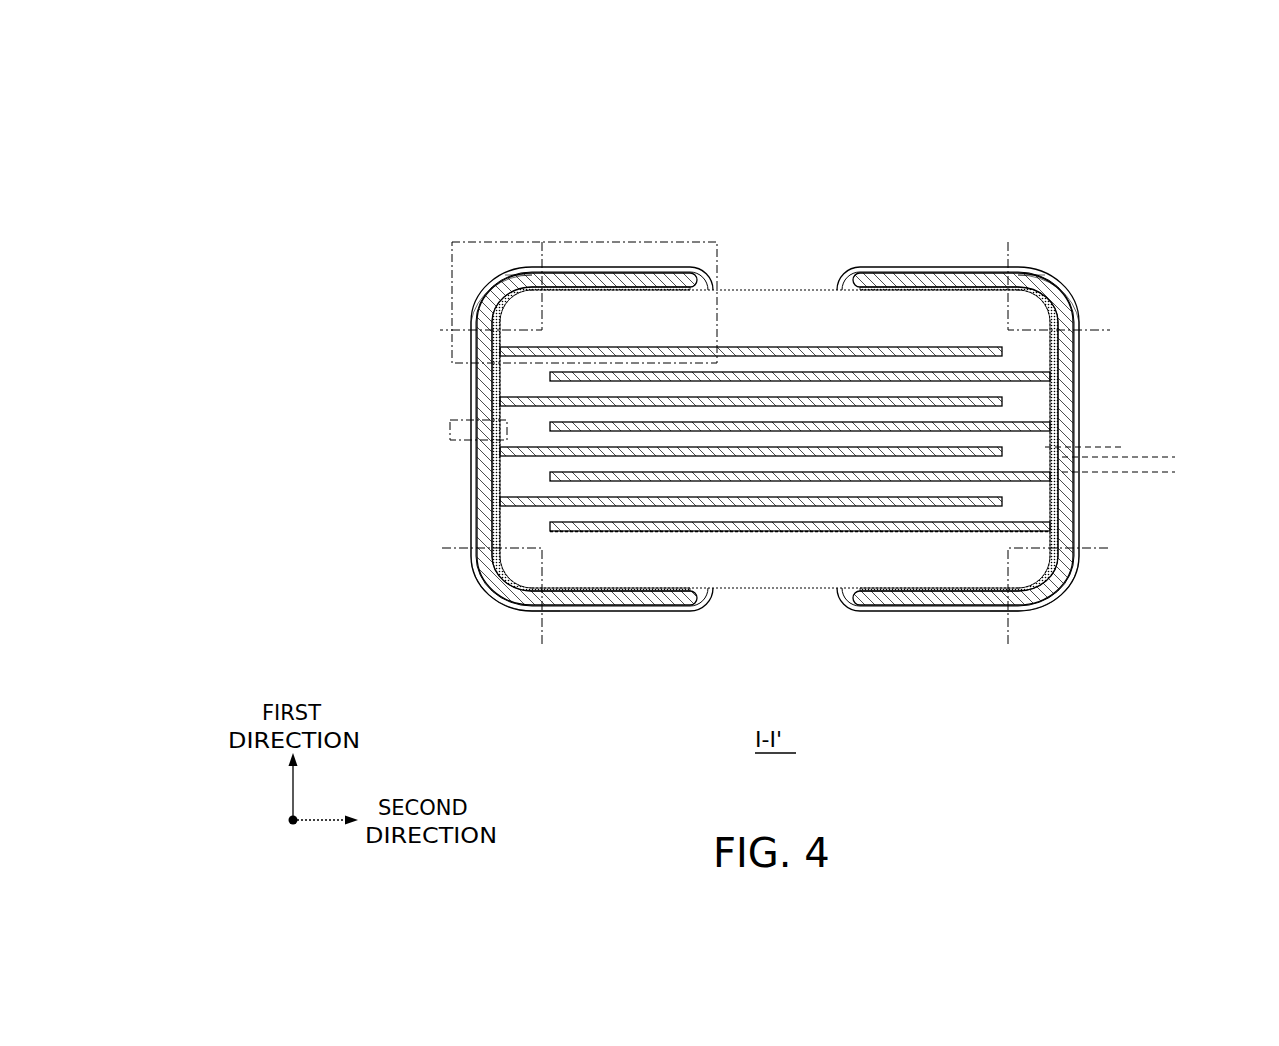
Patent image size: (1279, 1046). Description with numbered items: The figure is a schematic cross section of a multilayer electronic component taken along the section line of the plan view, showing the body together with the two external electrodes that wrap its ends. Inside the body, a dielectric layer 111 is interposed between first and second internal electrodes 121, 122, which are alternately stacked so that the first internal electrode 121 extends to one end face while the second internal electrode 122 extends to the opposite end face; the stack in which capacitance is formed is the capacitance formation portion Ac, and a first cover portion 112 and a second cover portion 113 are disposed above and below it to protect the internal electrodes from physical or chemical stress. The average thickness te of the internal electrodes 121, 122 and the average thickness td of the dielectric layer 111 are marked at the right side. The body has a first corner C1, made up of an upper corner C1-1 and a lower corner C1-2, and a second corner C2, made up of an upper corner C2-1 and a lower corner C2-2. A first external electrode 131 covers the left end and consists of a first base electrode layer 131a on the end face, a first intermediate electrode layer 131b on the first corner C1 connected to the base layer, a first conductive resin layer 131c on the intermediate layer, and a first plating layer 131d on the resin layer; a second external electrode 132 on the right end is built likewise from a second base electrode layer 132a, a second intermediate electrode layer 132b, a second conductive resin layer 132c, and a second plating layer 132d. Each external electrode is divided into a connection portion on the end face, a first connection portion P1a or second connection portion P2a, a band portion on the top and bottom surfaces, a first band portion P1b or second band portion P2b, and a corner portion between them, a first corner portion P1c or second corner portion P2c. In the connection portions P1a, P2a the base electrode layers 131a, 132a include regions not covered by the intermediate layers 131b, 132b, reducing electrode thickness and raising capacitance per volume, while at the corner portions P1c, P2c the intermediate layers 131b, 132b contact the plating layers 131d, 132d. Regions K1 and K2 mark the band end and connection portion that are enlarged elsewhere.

The dielectric layer 111 is at (797, 368).
The first cover portion 112 is at (831, 300).
The second cover portion 113 is at (741, 590).
The first internal electrode 121 is at (735, 347).
The second internal electrode 122 is at (765, 376).
The capacitance formation portion Ac is at (810, 534).
The first external electrode 131 is at (510, 441).
The first base electrode layer 131a is at (490, 350).
The first intermediate electrode layer 131b is at (486, 356).
The first conductive resin layer 131c is at (488, 398).
The first plating layer 131d is at (490, 412).
The second external electrode 132 is at (1042, 441).
The second base electrode layer 132a is at (1064, 325).
The second intermediate electrode layer 132b is at (1068, 345).
The second conductive resin layer 132c is at (1065, 378).
The second plating layer 132d is at (1176, 312).
The first connection portion P1a is at (433, 521).
The first band portion P1b is at (576, 222).
The first corner portion P1c is at (476, 274).
The second connection portion P2a is at (1117, 521).
The second band portion P2b is at (930, 222).
The second corner portion P2c is at (1074, 274).
The first corner C1 is at (534, 366).
The 1-1-th corner C1-1 is at (513, 275).
The 1-2-th corner C1-2 is at (517, 600).
The second corner C2 is at (990, 366).
The 2-1-th corner C2-1 is at (1037, 275).
The 2-2-th corner C2-2 is at (1033, 600).
The region K1 is at (663, 242).
The region K2 is at (462, 443).
The average thickness of internal electrodes te is at (1118, 432).
The average thickness of dielectric layer td is at (1168, 430).